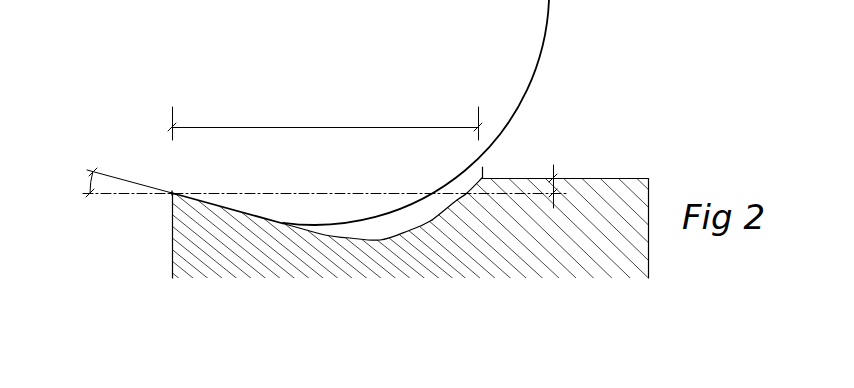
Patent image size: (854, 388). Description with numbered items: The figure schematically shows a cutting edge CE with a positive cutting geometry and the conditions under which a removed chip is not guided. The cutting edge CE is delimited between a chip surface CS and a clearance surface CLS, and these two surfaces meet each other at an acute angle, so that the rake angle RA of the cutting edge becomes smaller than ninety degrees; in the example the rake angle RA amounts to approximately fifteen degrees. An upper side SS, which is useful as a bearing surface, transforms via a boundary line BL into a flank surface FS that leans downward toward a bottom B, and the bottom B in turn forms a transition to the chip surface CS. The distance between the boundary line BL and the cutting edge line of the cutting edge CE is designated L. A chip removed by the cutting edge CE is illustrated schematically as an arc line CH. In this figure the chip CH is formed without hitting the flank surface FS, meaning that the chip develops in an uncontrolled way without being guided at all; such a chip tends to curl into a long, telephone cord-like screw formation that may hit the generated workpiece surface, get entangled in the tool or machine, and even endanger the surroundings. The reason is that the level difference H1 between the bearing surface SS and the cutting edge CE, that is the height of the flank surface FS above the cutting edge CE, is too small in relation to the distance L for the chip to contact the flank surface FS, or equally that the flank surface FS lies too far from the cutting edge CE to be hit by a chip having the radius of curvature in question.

The chip CH is at (540, 60).
The chip surface CS is at (219, 206).
The cutting edge CE is at (178, 207).
The clearance surface CLS is at (172, 218).
The bottom B is at (357, 240).
The flank surface FS is at (467, 182).
The boundary line BL is at (482, 167).
The upper side SS is at (626, 178).
The distance L is at (325, 120).
The level difference H1 is at (574, 186).
The rake angle RA is at (74, 182).